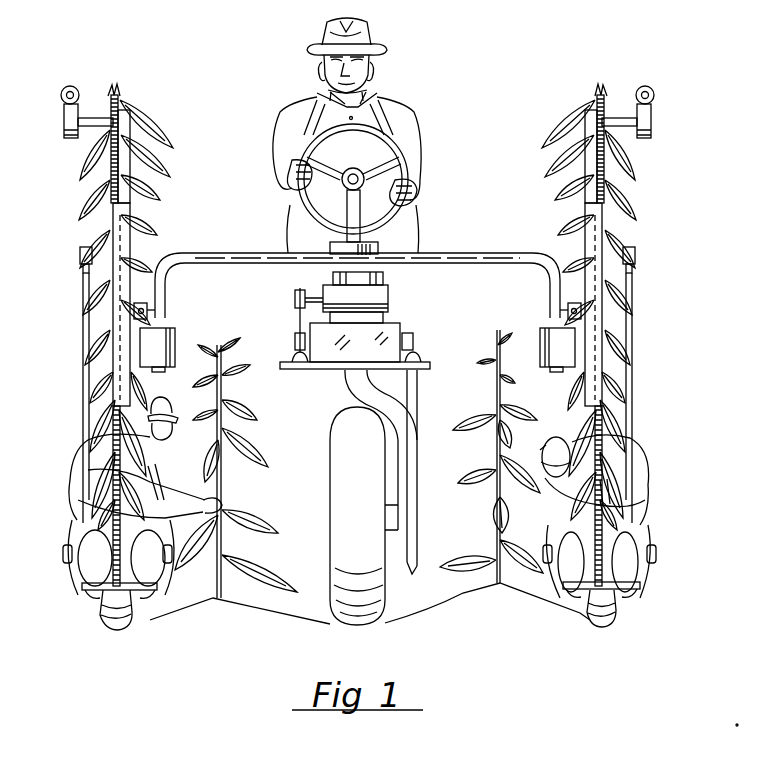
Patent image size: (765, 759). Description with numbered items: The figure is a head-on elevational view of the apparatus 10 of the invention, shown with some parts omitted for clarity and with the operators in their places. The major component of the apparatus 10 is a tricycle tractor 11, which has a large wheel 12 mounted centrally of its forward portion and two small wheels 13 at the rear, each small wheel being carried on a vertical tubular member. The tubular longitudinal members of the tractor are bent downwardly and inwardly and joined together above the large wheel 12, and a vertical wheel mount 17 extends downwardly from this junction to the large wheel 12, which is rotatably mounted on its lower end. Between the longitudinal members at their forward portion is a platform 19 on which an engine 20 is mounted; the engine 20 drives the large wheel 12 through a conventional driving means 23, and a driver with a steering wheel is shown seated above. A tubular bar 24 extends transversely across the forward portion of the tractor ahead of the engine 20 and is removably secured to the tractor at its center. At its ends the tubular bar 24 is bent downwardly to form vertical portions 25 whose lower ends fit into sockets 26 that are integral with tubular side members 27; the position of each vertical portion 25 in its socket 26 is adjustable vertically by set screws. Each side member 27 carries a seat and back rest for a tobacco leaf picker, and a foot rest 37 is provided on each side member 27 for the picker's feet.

The apparatus 10 is at (560, 239).
The tricycle tractor 11 is at (455, 262).
The large wheel 12 is at (340, 561).
The small wheels 13 is at (105, 617).
The vertical wheel mount 17 is at (365, 392).
The platform 19 is at (425, 368).
The engine 20 is at (350, 355).
The conventional driving means 23 is at (412, 400).
The tubular bar 24 is at (218, 260).
The vertical portions 25 is at (160, 306).
The sockets 26 is at (160, 343).
The tubular side members 27 is at (120, 322).
The foot rest 37 is at (143, 600).